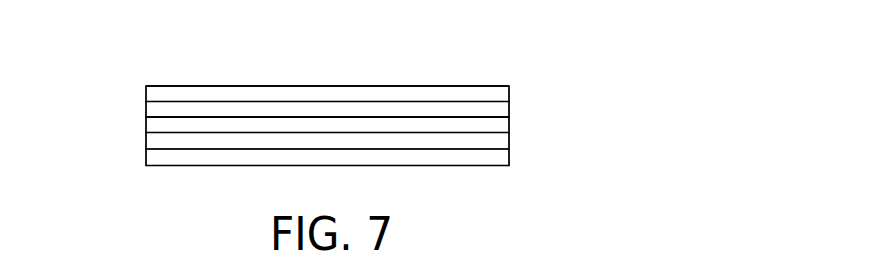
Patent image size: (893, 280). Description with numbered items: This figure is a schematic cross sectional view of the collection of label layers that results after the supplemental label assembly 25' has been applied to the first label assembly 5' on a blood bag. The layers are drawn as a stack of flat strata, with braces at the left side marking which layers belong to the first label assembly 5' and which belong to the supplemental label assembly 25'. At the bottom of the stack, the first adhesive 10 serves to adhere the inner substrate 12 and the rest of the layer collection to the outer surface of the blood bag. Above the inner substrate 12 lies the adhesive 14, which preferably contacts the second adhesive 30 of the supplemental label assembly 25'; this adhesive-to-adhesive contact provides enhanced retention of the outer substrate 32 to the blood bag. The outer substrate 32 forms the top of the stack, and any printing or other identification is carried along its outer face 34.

The first adhesive 10 is at (509, 157).
The inner substrate 12 is at (509, 146).
The adhesive 14 is at (509, 126).
The second adhesive 30 is at (509, 107).
The outer substrate 32 is at (509, 90).
The outer face 34 is at (444, 86).
The supplemental label assembly 25' is at (300, 101).
The first label assembly 5' is at (305, 141).